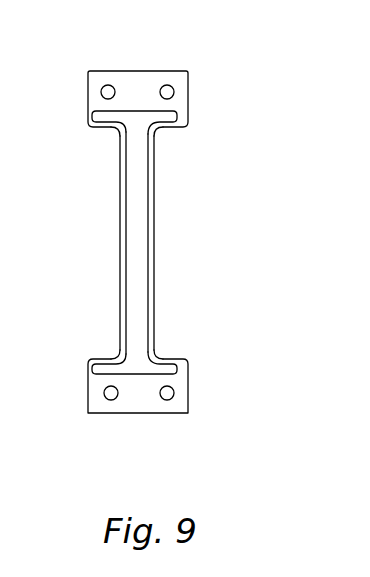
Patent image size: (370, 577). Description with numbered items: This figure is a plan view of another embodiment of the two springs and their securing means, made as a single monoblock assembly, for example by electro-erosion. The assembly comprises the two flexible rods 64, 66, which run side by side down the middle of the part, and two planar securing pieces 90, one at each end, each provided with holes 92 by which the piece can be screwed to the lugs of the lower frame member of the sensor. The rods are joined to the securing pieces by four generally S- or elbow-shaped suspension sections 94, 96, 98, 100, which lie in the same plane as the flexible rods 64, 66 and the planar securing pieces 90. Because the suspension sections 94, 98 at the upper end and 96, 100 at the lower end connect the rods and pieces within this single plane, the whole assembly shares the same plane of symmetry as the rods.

The planar securing piece 90 is at (188, 90).
The hole 92 is at (109, 85).
The suspension section 94 is at (101, 128).
The suspension section 98 is at (181, 128).
The flexible rod 64 is at (120, 240).
The flexible rod 66 is at (154, 238).
The suspension section 96 is at (108, 358).
The suspension section 100 is at (166, 358).